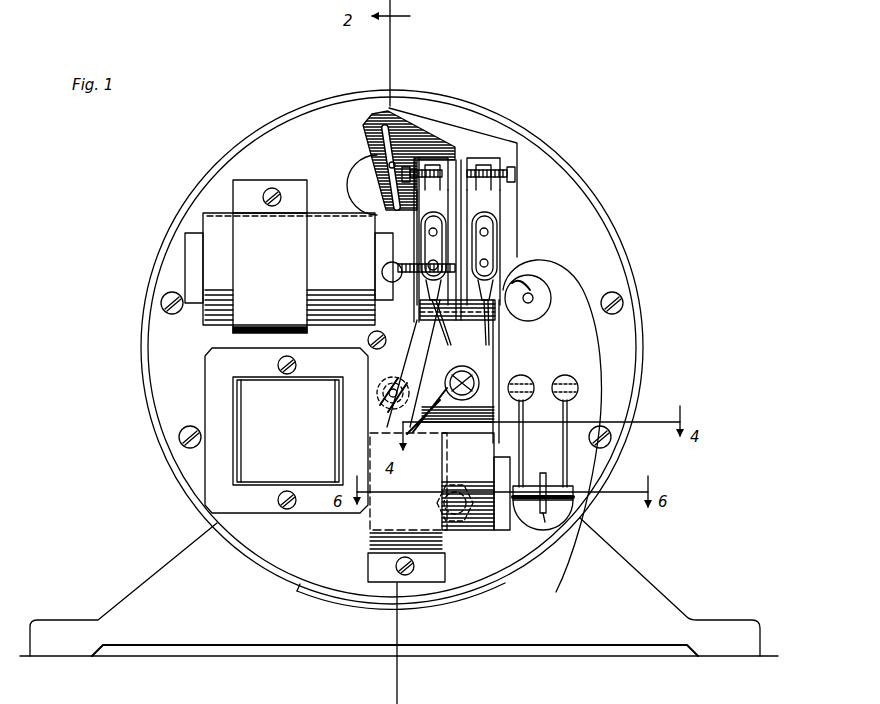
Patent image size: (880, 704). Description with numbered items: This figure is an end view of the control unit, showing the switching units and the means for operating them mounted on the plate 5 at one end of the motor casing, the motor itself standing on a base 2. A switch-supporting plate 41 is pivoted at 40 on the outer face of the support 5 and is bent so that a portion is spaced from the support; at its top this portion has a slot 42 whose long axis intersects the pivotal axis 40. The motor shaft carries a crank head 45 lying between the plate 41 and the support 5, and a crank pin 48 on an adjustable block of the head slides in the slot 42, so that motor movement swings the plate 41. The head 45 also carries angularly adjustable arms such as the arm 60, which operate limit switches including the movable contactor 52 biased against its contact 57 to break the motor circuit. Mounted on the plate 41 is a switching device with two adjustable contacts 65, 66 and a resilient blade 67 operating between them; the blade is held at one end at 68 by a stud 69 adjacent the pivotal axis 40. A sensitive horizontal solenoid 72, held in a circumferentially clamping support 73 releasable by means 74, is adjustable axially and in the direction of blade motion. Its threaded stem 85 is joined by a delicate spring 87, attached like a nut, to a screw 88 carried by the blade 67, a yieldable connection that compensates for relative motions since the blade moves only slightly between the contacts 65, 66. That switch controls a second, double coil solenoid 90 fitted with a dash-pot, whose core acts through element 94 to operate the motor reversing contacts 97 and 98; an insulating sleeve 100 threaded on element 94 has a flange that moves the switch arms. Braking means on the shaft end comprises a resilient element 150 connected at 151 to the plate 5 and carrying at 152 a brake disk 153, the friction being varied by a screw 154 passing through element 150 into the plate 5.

The base 2 is at (157, 587).
The plate 5 is at (597, 234).
The pivot 40 is at (447, 503).
The switch-supporting plate 41 is at (500, 350).
The slot 42 is at (393, 138).
The crank head 45 is at (352, 185).
The crank pin 48 is at (412, 126).
The movable contactor 52 is at (522, 283).
The contact 57 is at (534, 297).
The adjustable arm 60 is at (353, 163).
The adjustable contact 65 is at (457, 126).
The adjustable contact 66 is at (495, 158).
The resilient blade 67 is at (485, 129).
The blade holding point 68 is at (466, 379).
The stud 69 is at (451, 380).
The solenoid 72 is at (221, 209).
The solenoid support 73 is at (250, 237).
The releasing means 74 is at (272, 187).
The threaded stem 85 is at (385, 266).
The spring 87 is at (450, 265).
The screw 88 is at (465, 268).
The solenoid 90 is at (486, 556).
The element 94 is at (556, 494).
The motor reversing contact 97 is at (523, 438).
The motor reversing contact 98 is at (567, 415).
The insulating sleeve 100 is at (545, 520).
The resilient element 150 is at (383, 360).
The connection point 151 is at (390, 276).
The securing point 152 is at (387, 391).
The brake disk 153 is at (381, 404).
The screw 154 is at (368, 340).